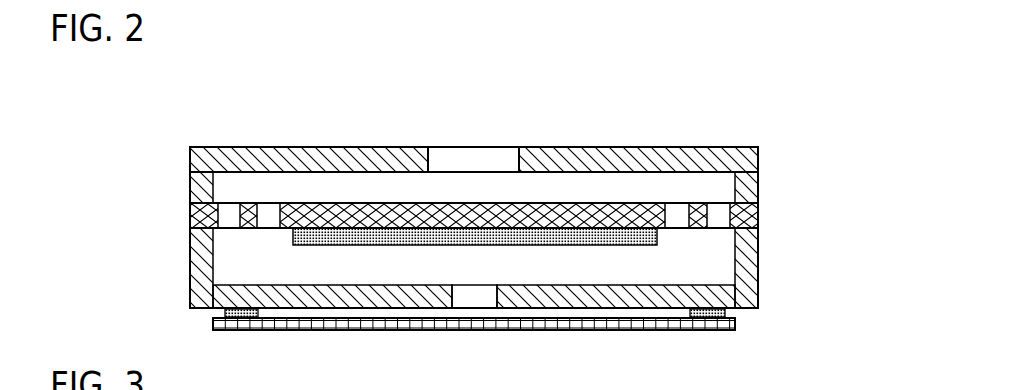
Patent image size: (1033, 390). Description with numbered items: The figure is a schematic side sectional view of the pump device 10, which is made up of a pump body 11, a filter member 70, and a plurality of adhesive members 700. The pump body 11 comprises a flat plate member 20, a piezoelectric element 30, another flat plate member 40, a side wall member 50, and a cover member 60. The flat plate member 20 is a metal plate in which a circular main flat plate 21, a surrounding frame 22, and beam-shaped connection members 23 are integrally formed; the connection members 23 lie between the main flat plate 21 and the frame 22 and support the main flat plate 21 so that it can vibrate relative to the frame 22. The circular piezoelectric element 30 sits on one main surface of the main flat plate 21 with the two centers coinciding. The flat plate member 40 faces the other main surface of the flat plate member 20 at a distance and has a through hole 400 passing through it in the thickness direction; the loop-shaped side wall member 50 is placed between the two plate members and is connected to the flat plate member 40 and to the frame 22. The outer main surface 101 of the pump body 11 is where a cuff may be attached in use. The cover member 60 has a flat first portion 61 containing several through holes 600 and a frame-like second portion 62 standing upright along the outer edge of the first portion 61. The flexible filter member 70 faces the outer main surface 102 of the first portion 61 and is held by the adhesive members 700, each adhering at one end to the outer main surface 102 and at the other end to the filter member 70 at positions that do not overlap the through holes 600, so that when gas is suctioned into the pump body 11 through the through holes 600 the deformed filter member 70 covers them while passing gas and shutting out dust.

The pump device 10 is at (751, 93).
The pump body 11 is at (763, 144).
The outer main surface 101 is at (203, 147).
The outer main surface 102 is at (203, 306).
The flat plate member 20 is at (807, 198).
The main flat plate 21 is at (577, 214).
The frame 22 is at (753, 218).
The connection members 23 is at (248, 229).
The piezoelectric element 30 is at (327, 236).
The flat plate member 40 is at (366, 160).
The through hole 400 is at (462, 160).
The side wall member 50 is at (192, 188).
The cover member 60 is at (821, 285).
The first portion 61 is at (712, 290).
The second portion 62 is at (745, 270).
The through holes 600 is at (479, 306).
The filter member 70 is at (337, 326).
The adhesive members 700 is at (240, 318).